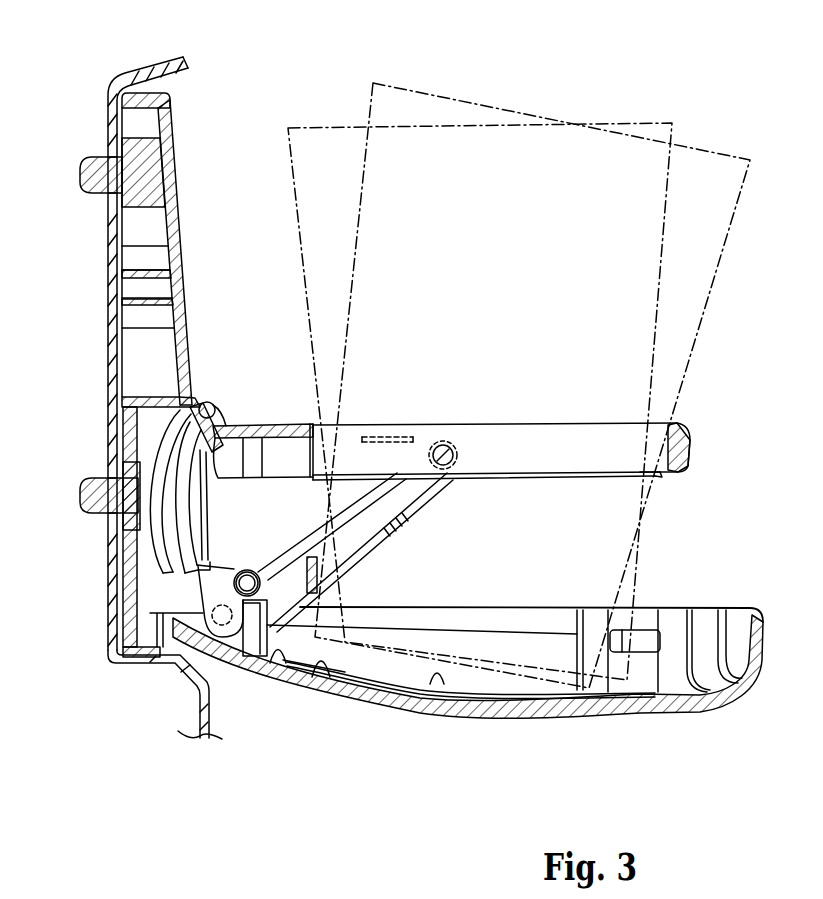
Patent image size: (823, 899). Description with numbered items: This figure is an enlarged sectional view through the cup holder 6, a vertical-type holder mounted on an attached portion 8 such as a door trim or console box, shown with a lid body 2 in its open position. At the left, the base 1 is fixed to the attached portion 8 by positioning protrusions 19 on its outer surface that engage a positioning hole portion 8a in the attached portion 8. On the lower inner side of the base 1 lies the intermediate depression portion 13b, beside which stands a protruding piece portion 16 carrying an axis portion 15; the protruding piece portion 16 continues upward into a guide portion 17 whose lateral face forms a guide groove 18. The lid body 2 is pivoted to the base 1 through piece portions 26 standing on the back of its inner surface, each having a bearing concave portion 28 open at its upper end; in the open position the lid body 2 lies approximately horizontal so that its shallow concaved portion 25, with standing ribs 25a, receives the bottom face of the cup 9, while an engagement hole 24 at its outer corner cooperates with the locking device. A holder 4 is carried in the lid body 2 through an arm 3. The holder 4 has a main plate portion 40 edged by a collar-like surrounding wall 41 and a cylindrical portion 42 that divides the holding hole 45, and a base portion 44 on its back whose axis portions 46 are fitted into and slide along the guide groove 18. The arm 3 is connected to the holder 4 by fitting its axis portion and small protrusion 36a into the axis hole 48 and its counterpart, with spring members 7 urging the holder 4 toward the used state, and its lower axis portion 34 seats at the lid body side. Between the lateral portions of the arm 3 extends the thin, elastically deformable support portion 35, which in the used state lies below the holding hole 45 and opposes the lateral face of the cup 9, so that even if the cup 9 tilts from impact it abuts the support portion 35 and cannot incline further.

The base 1 is at (199, 263).
The lid body 2 is at (612, 736).
The arm 3 is at (416, 518).
The holder 4 is at (691, 421).
The cup holder 6 is at (201, 151).
The spring member 7 is at (373, 426).
The attached portion 8 is at (108, 127).
The positioning hole portion 8a is at (102, 196).
The cup 9 is at (290, 128).
The intermediate depression portion 13b is at (157, 622).
The axis portion 15 is at (190, 681).
The protruding piece portion 16 is at (233, 633).
The guide portion 17 is at (157, 554).
The guide groove 18 is at (167, 481).
The positioning protrusion 19 is at (80, 168).
The engagement hole 24 is at (627, 645).
The concaved portion 25 is at (340, 672).
The rib 25a is at (425, 688).
The piece portion 26 is at (298, 688).
The bearing concave portion 28 is at (242, 570).
The axis portion 34 is at (250, 580).
The support portion 35 is at (343, 553).
The small protrusion 36a is at (443, 455).
The main plate portion 40 is at (713, 455).
The surrounding wall 41 is at (681, 471).
The cylindrical portion 42 is at (650, 483).
The base portion 44 is at (201, 402).
The holding hole 45 is at (512, 437).
The axis portion 46 is at (206, 481).
The axis hole 48 is at (457, 441).